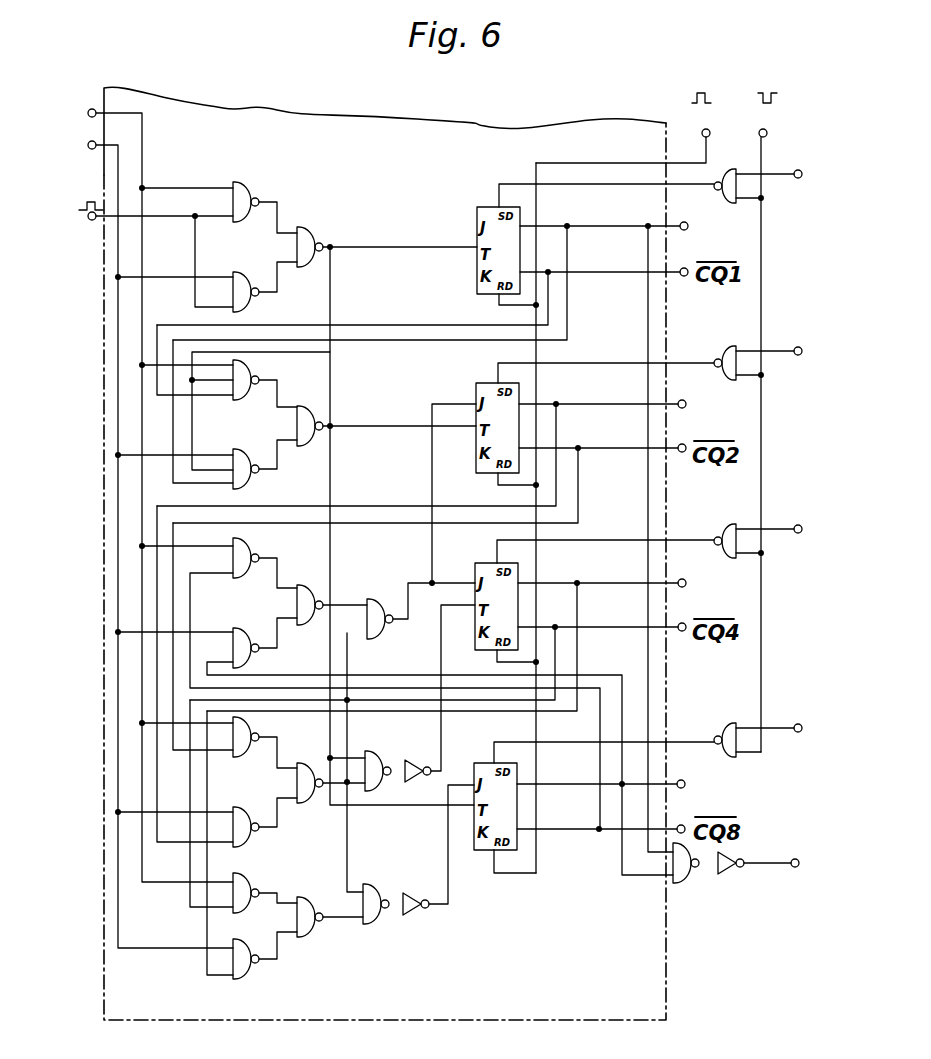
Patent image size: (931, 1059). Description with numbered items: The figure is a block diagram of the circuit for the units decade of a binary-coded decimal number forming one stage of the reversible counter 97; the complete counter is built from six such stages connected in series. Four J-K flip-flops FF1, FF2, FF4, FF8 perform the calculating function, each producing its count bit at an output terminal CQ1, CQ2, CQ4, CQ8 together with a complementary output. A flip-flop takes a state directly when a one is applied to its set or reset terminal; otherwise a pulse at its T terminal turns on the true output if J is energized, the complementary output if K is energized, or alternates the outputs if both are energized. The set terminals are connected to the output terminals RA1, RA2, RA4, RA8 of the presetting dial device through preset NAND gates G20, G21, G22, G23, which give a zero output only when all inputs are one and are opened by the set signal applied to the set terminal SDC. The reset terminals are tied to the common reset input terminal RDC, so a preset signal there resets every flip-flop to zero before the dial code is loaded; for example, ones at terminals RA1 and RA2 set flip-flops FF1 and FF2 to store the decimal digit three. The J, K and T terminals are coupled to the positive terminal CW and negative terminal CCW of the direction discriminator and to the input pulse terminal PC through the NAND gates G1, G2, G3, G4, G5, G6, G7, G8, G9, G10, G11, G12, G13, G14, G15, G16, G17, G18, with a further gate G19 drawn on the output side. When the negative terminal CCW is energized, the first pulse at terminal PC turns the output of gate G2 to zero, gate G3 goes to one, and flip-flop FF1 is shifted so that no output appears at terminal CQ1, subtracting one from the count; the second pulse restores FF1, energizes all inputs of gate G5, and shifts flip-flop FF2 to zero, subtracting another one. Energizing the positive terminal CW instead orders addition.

The reversible counter 97 is at (418, 119).
The NAND gate G1 is at (258, 197).
The NAND gate G2 is at (255, 285).
The NAND gate G3 is at (324, 240).
The NAND gate G4 is at (259, 378).
The NAND gate G5 is at (254, 461).
The NAND gate G6 is at (321, 416).
The NAND gate G7 is at (257, 555).
The NAND gate G8 is at (254, 636).
The NAND gate G9 is at (314, 595).
The NAND gate G10 is at (266, 735).
The NAND gate G11 is at (262, 819).
The NAND gate G12 is at (313, 772).
The NAND gate G13 is at (264, 888).
The NAND gate G14 is at (258, 950).
The NAND gate G15 is at (321, 909).
The NAND gate G16 is at (391, 609).
The NAND gate G17 is at (398, 762).
The NAND gate G18 is at (396, 893).
The NAND gate G19 is at (736, 872).
The preset NAND gate G20 is at (754, 173).
The preset NAND gate G21 is at (753, 353).
The preset NAND gate G22 is at (753, 529).
The preset NAND gate G23 is at (753, 728).
The J-K flip-flop FF1 is at (578, 243).
The J-K flip-flop FF2 is at (568, 424).
The J-K flip-flop FF4 is at (575, 601).
The J-K flip-flop FF8 is at (582, 805).
The positive terminal CW is at (148, 484).
The negative terminal CCW is at (138, 534).
The input pulse terminal PC is at (148, 254).
The common reset input terminal RDC is at (636, 128).
The set terminal SDC is at (774, 422).
The output terminal of presetting dial device RA1 is at (796, 161).
The output terminal of presetting dial device RA2 is at (801, 340).
The output terminal of presetting dial device RA4 is at (801, 517).
The output terminal of presetting dial device RA8 is at (801, 715).
The output terminal CQ1 is at (631, 230).
The output terminal CQ2 is at (629, 406).
The output terminal CQ4 is at (629, 585).
The output terminal CQ8 is at (628, 786).